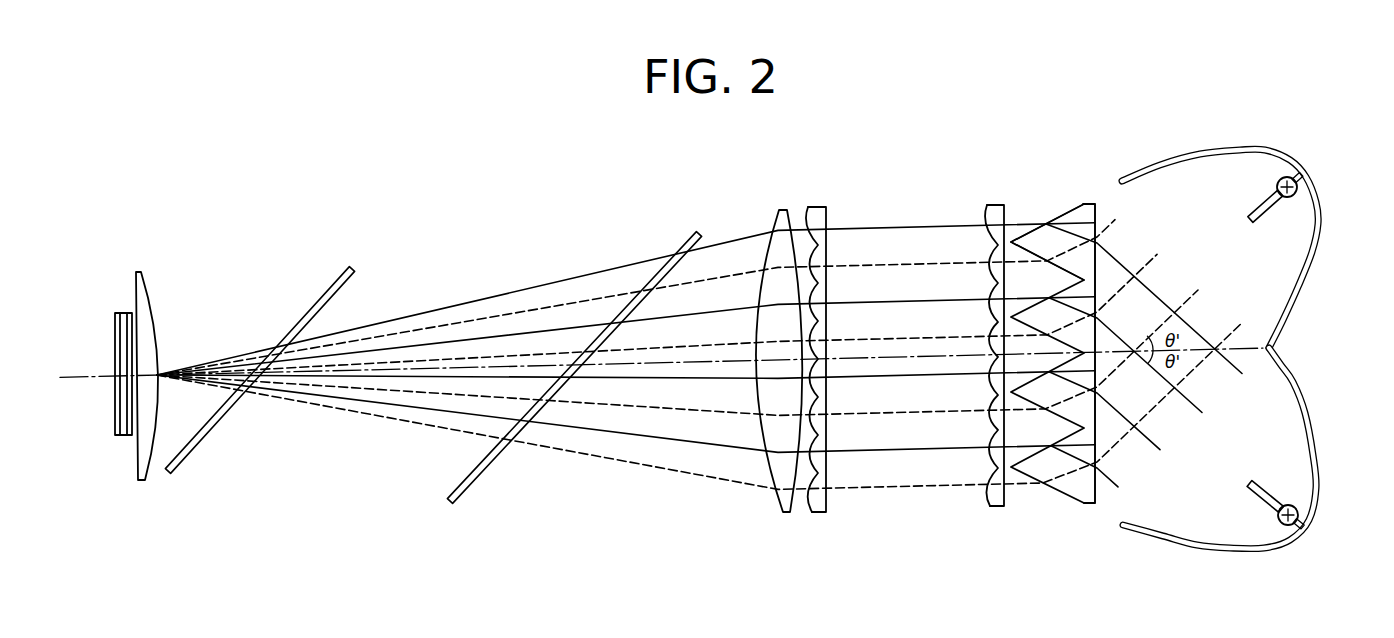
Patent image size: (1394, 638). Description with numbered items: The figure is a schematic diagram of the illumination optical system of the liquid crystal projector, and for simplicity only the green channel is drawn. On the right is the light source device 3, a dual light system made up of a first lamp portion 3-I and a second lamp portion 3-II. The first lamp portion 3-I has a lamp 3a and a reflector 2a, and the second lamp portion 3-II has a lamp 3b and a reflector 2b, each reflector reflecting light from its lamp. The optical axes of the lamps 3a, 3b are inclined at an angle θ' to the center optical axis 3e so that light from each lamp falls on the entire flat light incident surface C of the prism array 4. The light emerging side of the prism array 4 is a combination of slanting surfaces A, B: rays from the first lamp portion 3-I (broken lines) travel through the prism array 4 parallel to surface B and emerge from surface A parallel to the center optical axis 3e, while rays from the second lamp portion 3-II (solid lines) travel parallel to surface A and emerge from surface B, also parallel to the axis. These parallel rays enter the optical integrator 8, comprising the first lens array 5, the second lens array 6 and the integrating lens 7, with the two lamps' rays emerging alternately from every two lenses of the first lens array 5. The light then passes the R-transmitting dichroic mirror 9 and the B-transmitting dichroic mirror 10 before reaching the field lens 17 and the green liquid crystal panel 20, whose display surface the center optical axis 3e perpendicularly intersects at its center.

The reflector 2a is at (1278, 150).
The reflector 2b is at (1262, 553).
The light source device 3 is at (1250, 347).
The first lamp portion 3-I is at (1205, 144).
The second lamp portion 3-II is at (1198, 554).
The lamp 3a is at (1277, 207).
The lamp 3b is at (1274, 497).
The center optical axis 3e is at (1250, 347).
The prism array 4 is at (1093, 501).
The first lens array 5 is at (995, 382).
The second lens array 6 is at (824, 513).
The integrating lens 7 is at (788, 513).
The optical integrator 8 is at (883, 407).
The R-transmitting dichroic mirror 9 is at (497, 457).
The B-transmitting dichroic mirror 10 is at (215, 426).
The field lens 17 is at (142, 481).
The transmission type liquid crystal display 20 is at (128, 437).
The prism slanting surface A is at (1028, 246).
The prism slanting surface B is at (1062, 217).
The light incident surface C is at (1097, 216).